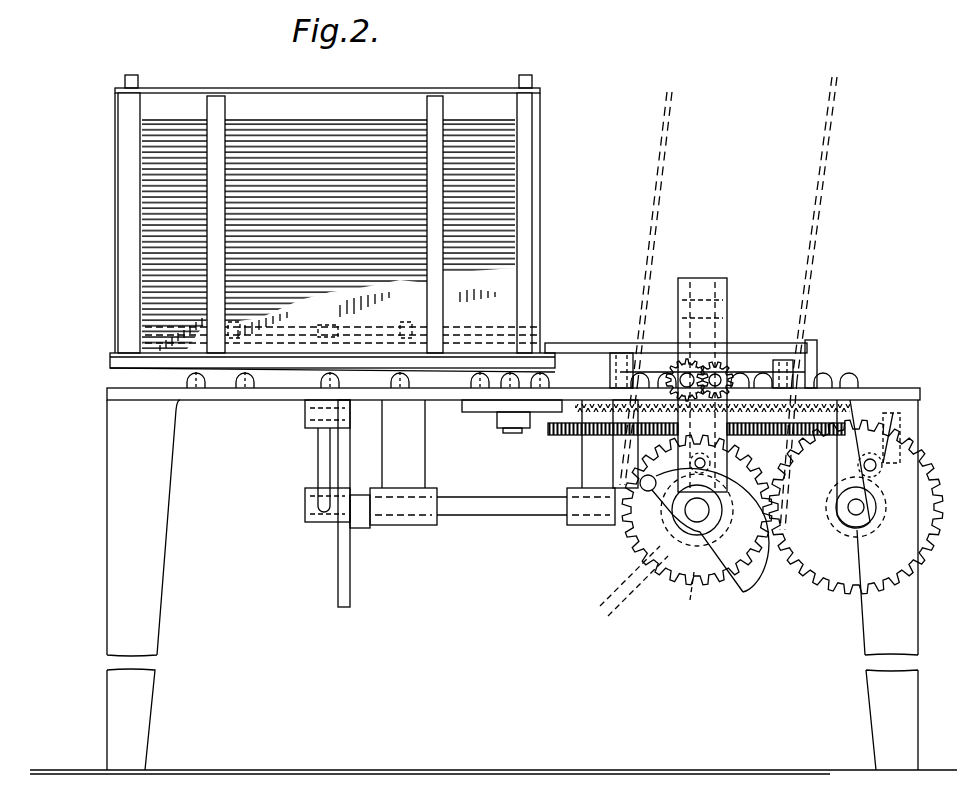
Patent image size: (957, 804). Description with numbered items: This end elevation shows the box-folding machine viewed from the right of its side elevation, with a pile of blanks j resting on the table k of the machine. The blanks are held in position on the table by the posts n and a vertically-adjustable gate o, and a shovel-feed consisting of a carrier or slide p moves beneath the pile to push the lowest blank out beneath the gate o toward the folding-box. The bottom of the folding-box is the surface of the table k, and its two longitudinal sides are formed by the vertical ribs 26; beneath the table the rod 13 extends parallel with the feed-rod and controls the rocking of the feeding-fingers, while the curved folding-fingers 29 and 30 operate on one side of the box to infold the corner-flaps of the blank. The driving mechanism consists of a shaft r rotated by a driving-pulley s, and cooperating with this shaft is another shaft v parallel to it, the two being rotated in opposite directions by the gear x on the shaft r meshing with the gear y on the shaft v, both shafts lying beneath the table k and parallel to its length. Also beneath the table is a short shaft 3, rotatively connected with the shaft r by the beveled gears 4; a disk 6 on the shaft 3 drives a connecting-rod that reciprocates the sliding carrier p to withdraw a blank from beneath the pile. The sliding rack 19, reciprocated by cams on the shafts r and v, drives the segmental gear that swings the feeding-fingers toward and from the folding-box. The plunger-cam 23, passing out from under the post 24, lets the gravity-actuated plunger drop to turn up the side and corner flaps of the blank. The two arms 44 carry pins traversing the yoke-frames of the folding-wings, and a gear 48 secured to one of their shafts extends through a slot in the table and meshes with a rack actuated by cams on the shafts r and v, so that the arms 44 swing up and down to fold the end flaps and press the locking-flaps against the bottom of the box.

The gate o is at (303, 92).
The posts n is at (210, 100).
The pile of blanks j is at (496, 192).
The carrier or slide p is at (286, 398).
The table k is at (247, 398).
The second rod 13 is at (561, 344).
The curved folding-finger 29 is at (614, 356).
The gear 48 is at (653, 355).
The vertical ribs 26 is at (752, 362).
The curved folding-finger 30 is at (812, 366).
The post 24 is at (718, 284).
The arms 44 is at (572, 438).
The sliding rack 19 is at (540, 440).
The disk 6 is at (351, 583).
The short shaft 3 is at (489, 513).
The gear x is at (643, 540).
The shaft r is at (696, 512).
The plunger-cam 23 is at (752, 580).
The beveled gears 4 is at (606, 604).
The driving-pulley s is at (688, 600).
The gear y is at (855, 580).
The shaft v is at (832, 530).